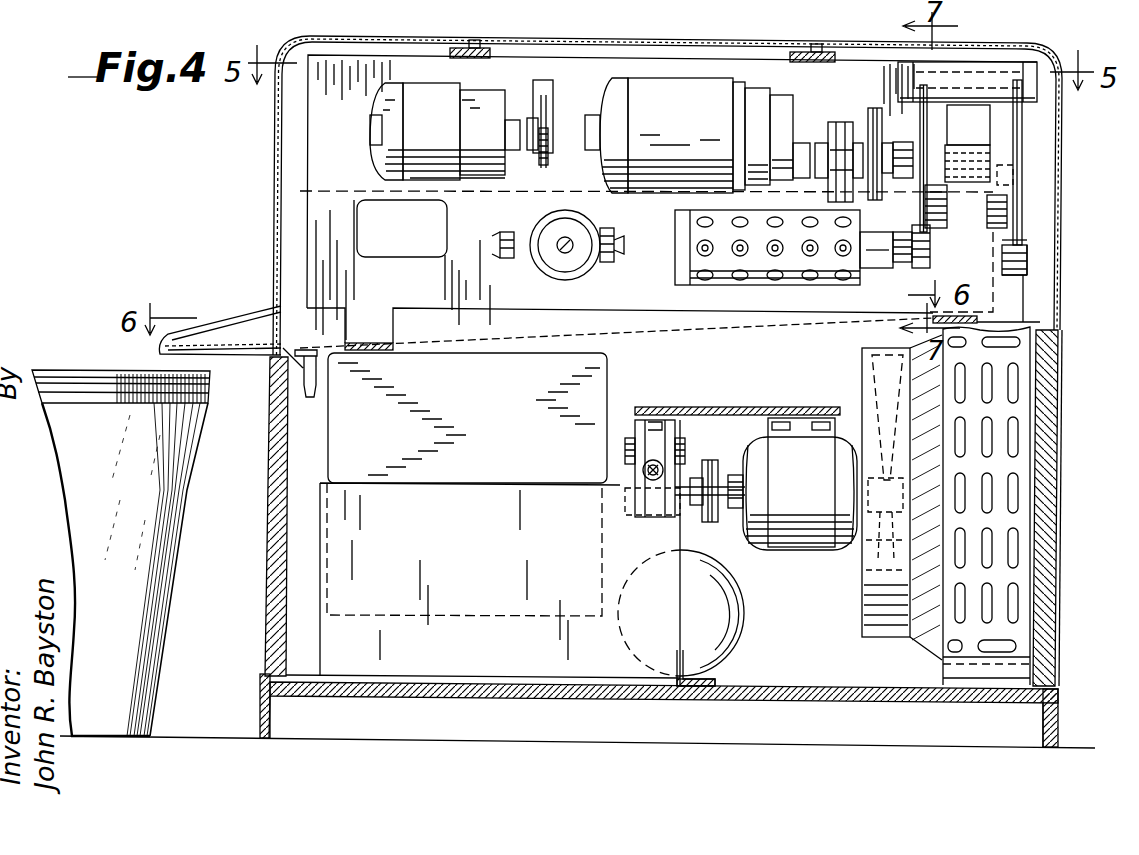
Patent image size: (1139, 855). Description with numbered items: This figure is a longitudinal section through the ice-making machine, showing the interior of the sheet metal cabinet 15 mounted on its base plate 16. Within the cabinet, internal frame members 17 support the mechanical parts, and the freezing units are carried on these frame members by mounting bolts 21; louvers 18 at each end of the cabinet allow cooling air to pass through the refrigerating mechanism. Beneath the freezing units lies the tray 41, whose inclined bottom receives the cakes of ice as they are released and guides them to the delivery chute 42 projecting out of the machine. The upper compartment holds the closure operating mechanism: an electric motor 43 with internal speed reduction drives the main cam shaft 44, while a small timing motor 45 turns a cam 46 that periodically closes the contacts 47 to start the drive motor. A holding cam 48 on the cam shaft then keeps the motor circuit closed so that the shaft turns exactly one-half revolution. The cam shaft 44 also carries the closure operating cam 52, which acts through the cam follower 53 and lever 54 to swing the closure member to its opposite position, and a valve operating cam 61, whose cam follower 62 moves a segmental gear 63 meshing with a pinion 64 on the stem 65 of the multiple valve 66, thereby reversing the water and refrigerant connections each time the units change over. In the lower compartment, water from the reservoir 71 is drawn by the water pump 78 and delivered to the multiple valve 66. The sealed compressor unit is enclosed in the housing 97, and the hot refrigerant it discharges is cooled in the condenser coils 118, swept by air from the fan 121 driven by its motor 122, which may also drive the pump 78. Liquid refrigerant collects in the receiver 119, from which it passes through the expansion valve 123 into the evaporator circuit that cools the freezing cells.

The cabinet 15 is at (272, 154).
The base plate 16 is at (260, 692).
The internal frame members 17 is at (488, 50).
The louvers 18 is at (268, 511).
The mounting bolts 21 is at (470, 45).
The tray 41 is at (650, 324).
The delivery chute 42 is at (232, 332).
The electric motor 43 is at (698, 136).
The main cam shaft 44 is at (997, 153).
The timing motor 45 is at (438, 136).
The cam 46 is at (548, 97).
The contacts 47 is at (549, 142).
The holding cam 48 is at (874, 122).
The closure operating cam 52 is at (997, 119).
The cam follower 53 is at (987, 197).
The lever 54 is at (1017, 226).
The valve operating cam 61 is at (943, 120).
The cam follower 62 is at (947, 206).
The segmental gear 63 is at (923, 210).
The pinion 64 is at (930, 249).
The stem 65 is at (900, 266).
The multiple valve 66 is at (670, 268).
The water reservoir 71 is at (447, 486).
The water pump 78 is at (635, 452).
The housing 97 is at (500, 424).
The condenser coils 118 is at (1015, 445).
The liquid receiver 119 is at (735, 640).
The fan 121 is at (862, 612).
The driving motor 122 is at (800, 484).
The expansion valve 123 is at (556, 262).